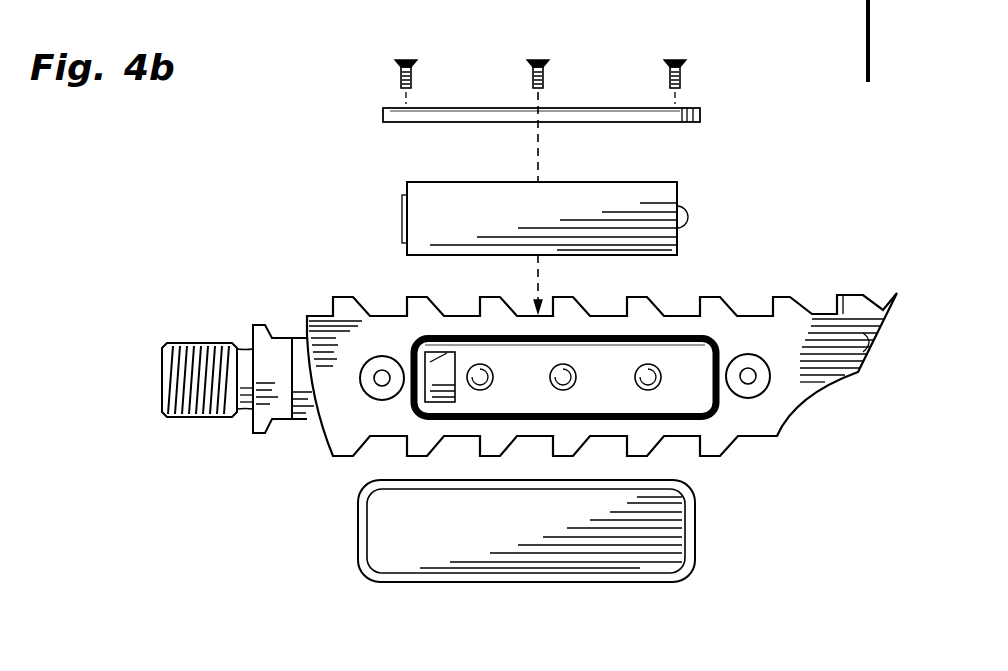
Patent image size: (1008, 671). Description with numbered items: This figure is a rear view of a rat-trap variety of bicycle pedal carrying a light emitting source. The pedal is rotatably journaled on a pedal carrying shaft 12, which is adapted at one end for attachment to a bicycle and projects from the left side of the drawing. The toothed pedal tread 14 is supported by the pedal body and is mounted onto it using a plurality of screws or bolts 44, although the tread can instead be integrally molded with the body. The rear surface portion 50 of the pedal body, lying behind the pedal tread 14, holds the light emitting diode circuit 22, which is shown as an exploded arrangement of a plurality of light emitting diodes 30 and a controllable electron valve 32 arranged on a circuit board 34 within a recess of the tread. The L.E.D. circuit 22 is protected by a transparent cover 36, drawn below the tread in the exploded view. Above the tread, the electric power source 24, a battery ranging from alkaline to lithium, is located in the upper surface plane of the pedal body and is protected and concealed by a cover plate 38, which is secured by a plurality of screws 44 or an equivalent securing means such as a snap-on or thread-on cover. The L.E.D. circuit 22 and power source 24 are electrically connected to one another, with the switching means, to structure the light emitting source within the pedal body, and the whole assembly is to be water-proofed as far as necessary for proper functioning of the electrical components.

The pedal carrying shaft 12 is at (277, 348).
The pedal tread 14 is at (360, 422).
The light emitting diode circuit 22 is at (697, 366).
The electric power source 24 is at (405, 220).
The light emitting diodes 30 is at (636, 381).
The controllable electron valve 32 is at (453, 355).
The circuit board 34 is at (605, 357).
The transparent cover 36 is at (427, 525).
The cover plate 38 is at (420, 123).
The screws 44 is at (400, 60).
The rear surface portion 50 is at (353, 340).